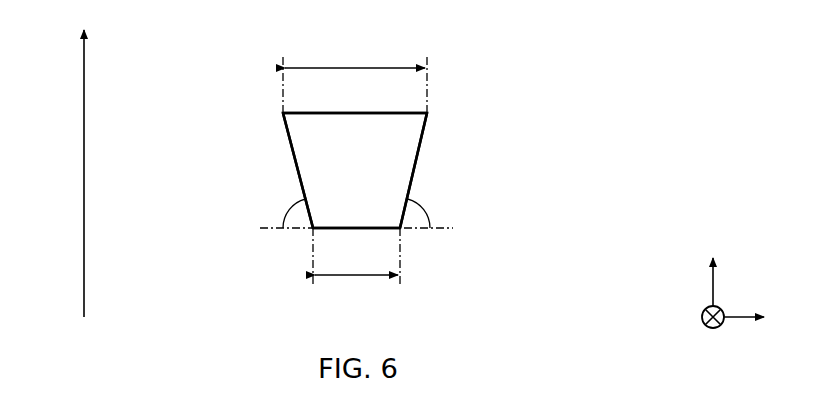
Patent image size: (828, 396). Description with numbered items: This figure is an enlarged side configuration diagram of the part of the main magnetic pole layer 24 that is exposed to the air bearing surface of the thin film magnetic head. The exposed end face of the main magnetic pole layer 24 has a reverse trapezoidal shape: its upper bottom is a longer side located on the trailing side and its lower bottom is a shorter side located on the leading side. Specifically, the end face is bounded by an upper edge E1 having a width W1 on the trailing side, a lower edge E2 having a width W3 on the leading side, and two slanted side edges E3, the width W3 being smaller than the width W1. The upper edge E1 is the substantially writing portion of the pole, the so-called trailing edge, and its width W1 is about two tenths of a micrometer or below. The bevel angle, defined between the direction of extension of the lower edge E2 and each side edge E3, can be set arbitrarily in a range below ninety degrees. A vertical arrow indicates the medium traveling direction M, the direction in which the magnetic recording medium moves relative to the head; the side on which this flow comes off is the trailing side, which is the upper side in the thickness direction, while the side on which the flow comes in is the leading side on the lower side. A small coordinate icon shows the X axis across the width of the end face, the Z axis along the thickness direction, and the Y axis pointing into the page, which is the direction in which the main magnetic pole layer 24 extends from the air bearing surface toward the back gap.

The main magnetic pole layer 24 is at (313, 132).
The upper edge E1 is at (400, 108).
The lower edge E2 is at (371, 234).
The side edge E3 is at (292, 160).
The width of the upper edge W1 is at (355, 74).
The width of the lower edge W3 is at (356, 268).
The medium traveling direction M is at (84, 258).
The X-axis direction X is at (755, 318).
The Y-axis direction Y is at (704, 317).
The Z-axis direction Z is at (712, 267).